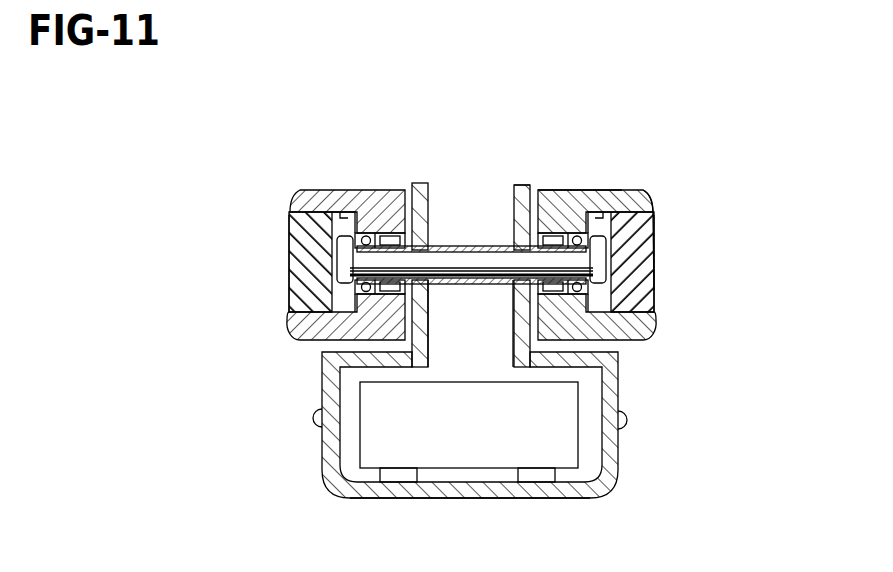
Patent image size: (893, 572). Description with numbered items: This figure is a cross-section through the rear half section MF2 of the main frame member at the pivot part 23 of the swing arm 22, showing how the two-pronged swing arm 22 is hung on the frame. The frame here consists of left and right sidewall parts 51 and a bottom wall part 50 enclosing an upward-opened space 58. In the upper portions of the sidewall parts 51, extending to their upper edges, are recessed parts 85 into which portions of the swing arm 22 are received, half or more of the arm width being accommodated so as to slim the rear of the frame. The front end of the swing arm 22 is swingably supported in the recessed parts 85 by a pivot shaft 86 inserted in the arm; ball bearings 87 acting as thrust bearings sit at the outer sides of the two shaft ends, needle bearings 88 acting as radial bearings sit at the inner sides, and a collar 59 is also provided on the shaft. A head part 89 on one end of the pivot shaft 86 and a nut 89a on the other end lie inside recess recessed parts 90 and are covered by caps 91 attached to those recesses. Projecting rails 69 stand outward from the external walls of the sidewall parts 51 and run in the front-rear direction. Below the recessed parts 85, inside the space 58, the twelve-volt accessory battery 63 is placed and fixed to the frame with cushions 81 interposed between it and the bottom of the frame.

The swing arm 22 is at (608, 188).
The pivot part 23 is at (653, 215).
The bottom wall part 50 is at (477, 498).
The sidewall part 51 is at (320, 387).
The space 58 is at (459, 346).
The collar 59 is at (462, 240).
The 12-volt battery 63 is at (457, 439).
The projecting rail 69 is at (312, 427).
The cushion 81 is at (395, 482).
The recessed part 85 is at (330, 342).
The pivot shaft 86 is at (483, 246).
The ball bearing 87 is at (370, 235).
The needle bearing 88 is at (388, 235).
The head part 89 is at (615, 255).
The nut 89a is at (313, 258).
The recess recessed part 90 is at (308, 190).
The cap 91 is at (287, 283).
The rear half section MF2 is at (517, 185).